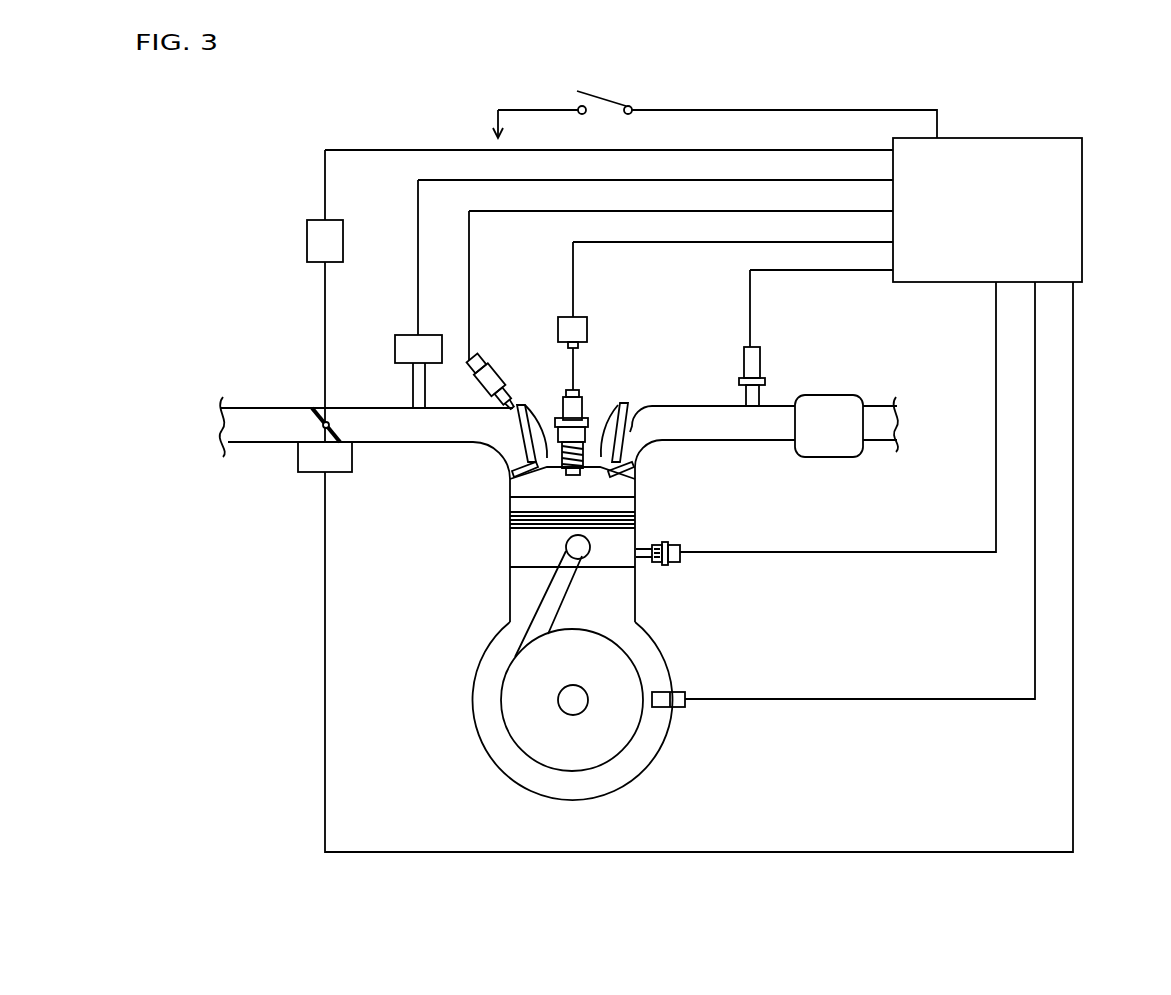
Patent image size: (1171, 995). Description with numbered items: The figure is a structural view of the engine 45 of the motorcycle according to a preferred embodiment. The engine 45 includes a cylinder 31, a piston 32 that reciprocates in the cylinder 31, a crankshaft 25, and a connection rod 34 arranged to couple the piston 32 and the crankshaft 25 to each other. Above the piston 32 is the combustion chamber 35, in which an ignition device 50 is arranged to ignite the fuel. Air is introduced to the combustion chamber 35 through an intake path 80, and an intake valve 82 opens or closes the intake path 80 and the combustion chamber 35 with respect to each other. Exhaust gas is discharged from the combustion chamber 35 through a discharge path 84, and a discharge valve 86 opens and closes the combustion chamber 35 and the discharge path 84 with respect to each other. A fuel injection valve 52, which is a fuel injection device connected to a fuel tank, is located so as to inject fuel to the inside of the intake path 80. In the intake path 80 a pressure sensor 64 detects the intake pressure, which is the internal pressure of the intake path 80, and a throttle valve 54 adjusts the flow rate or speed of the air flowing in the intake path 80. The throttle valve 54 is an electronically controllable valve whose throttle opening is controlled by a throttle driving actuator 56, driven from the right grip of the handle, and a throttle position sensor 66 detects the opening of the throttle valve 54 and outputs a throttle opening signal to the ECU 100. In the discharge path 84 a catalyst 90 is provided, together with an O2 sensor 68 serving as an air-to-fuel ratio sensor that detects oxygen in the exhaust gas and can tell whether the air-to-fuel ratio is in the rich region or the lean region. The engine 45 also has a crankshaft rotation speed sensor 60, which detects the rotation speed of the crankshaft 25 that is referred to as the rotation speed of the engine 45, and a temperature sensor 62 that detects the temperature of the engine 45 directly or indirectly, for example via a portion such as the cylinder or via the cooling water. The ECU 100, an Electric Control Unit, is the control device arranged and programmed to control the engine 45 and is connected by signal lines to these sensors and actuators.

The ECU 100 is at (1060, 138).
The throttle driving actuator 56 is at (307, 238).
The pressure sensor 64 is at (407, 335).
The intake path 80 is at (243, 417).
The throttle valve 54 is at (320, 407).
The throttle position sensor 66 is at (315, 472).
The fuel injection valve 52 is at (493, 373).
The ignition device 50 is at (590, 392).
The intake valve 82 is at (543, 455).
The discharge valve 86 is at (606, 435).
The discharge path 84 is at (763, 441).
The catalyst 90 is at (840, 395).
The O2 sensor 68 is at (743, 357).
The combustion chamber 35 is at (512, 487).
The cylinder 31 is at (510, 545).
The piston 32 is at (640, 500).
The connection rod 34 is at (550, 592).
The engine 45 is at (658, 768).
The crankshaft 25 is at (573, 715).
The temperature sensor 62 is at (675, 543).
The crankshaft rotation speed sensor 60 is at (682, 695).